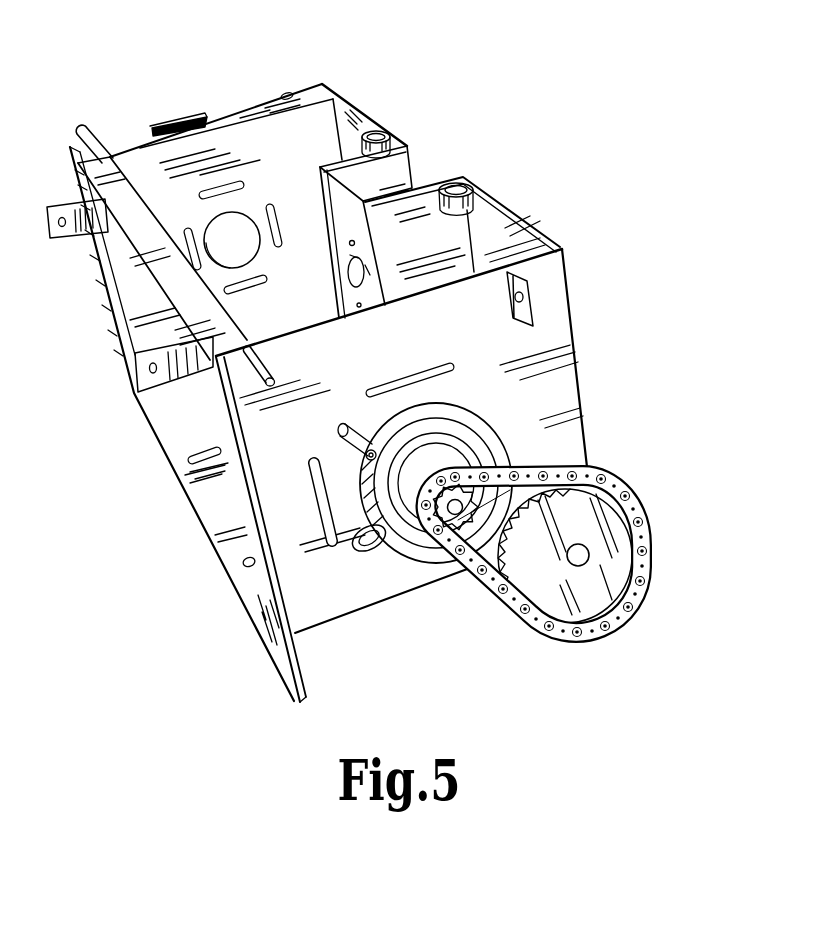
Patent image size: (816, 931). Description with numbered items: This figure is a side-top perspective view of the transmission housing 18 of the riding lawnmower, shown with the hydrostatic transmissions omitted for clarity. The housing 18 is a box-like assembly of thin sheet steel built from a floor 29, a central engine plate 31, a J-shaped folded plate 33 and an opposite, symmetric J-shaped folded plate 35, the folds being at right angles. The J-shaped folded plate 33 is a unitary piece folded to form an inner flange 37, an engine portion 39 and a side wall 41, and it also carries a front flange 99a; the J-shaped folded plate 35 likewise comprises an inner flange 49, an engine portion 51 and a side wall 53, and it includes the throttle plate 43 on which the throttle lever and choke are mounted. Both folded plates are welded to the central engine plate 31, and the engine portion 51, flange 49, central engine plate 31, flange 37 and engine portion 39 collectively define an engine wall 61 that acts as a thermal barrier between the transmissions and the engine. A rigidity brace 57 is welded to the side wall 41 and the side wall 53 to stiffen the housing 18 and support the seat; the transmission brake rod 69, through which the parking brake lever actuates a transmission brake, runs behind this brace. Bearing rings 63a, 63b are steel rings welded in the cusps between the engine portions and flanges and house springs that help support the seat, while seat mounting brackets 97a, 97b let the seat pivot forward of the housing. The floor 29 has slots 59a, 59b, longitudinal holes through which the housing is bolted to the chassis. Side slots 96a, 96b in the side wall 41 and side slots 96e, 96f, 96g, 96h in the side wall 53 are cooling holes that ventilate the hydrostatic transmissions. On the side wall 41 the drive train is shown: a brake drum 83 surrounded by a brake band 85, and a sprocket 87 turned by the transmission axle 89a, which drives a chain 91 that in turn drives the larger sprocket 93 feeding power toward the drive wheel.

The transmission housing 18 is at (344, 81).
The floor 29 is at (209, 514).
The central engine plate 31 is at (337, 229).
The J-shaped folded plate 33 is at (574, 318).
The J-shaped folded plate 35 is at (203, 118).
The inner flange 37 is at (400, 248).
The engine portion 39 is at (489, 258).
The side wall 41 is at (394, 336).
The throttle plate 43 is at (300, 94).
The inner flange 49 is at (372, 189).
The engine portion 51 is at (358, 120).
The side wall 53 is at (303, 149).
The rigidity brace 57 is at (144, 258).
The slot 59a is at (243, 566).
The slot 59b is at (212, 452).
The engine wall 61 is at (479, 172).
The bearing ring 63a is at (474, 200).
The bearing ring 63b is at (387, 130).
The transmission brake rod 69 is at (80, 128).
The brake drum 83 is at (429, 458).
The brake band 85 is at (480, 412).
The sprocket 87 is at (521, 470).
The transmission axle 89a is at (459, 514).
The chain 91 is at (648, 580).
The sprocket 93 is at (554, 609).
The side slot 96a is at (376, 388).
The side slot 96b is at (314, 512).
The side slot 96e is at (243, 188).
The side slot 96f is at (188, 228).
The side slot 96g is at (266, 280).
The side slot 96h is at (276, 211).
The seat mounting bracket 97a is at (138, 394).
The seat mounting bracket 97b is at (56, 241).
The front flange 99a is at (308, 693).